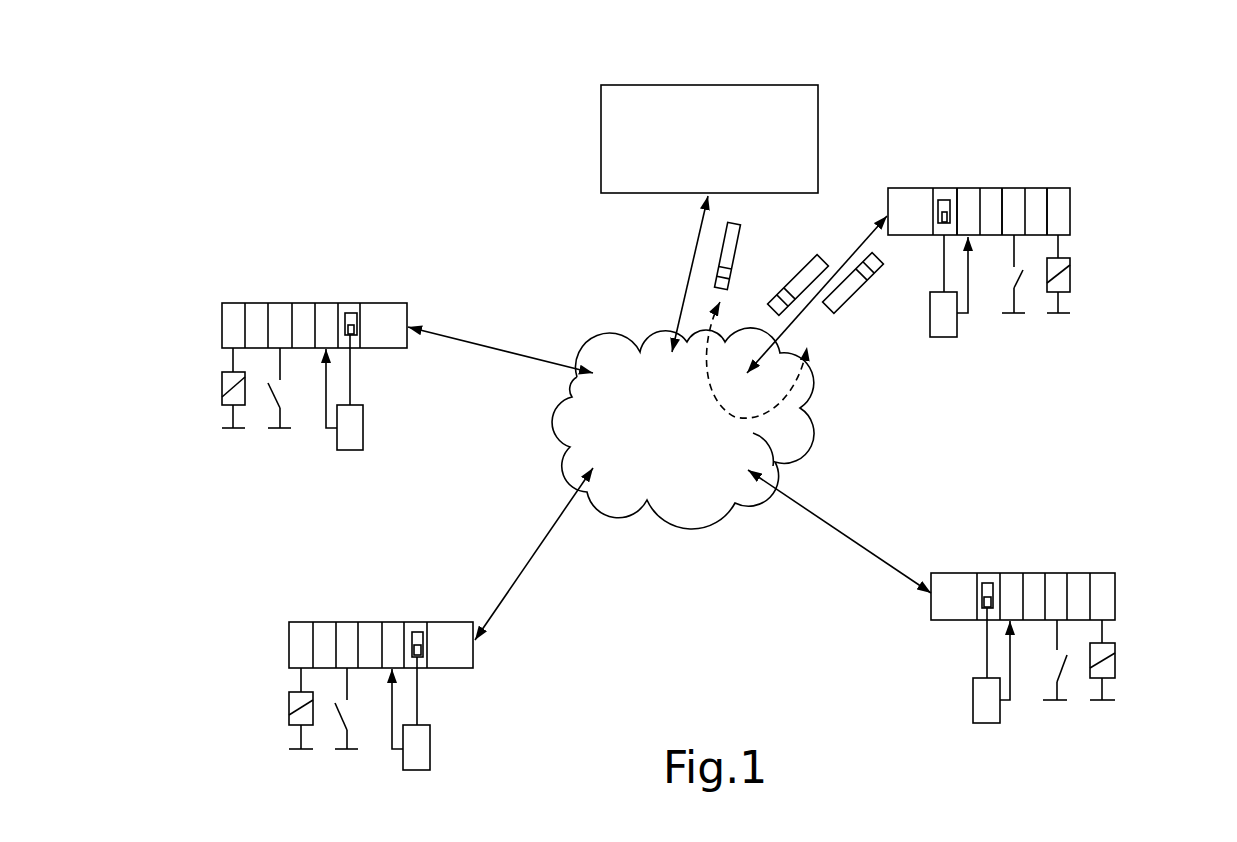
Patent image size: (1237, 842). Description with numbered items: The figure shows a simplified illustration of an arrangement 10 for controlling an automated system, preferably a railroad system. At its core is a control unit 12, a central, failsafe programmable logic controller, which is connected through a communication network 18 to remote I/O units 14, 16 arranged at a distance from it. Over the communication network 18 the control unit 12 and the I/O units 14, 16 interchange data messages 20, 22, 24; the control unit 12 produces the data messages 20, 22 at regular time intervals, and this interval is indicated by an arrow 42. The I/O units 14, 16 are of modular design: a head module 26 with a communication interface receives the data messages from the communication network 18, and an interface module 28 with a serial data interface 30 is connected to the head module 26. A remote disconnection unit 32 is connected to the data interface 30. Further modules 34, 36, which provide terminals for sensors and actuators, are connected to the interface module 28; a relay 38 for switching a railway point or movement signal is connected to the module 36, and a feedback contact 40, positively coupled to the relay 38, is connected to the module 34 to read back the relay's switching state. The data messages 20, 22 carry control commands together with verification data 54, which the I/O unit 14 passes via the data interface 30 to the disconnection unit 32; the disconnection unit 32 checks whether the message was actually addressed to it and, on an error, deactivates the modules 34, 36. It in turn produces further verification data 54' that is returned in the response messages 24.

The arrangement 10 is at (382, 128).
The control unit 12 is at (818, 118).
The I/O unit 14 is at (1054, 255).
The I/O unit 16 is at (350, 302).
The communication network 18 is at (698, 530).
The data message 20 is at (853, 298).
The data message 22 is at (740, 252).
The data message 24 is at (818, 258).
The head module 26 is at (915, 187).
The interface module 28 is at (943, 187).
The data interface 30 is at (938, 213).
The remote disconnection unit 32 is at (943, 337).
The module 34 is at (1010, 203).
The module 36 is at (1055, 213).
The relay 38 is at (1070, 275).
The feedback contact 40 is at (1022, 272).
The arrow 42 is at (762, 408).
The verification data 54 is at (632, 260).
The further verification data 54' is at (844, 388).